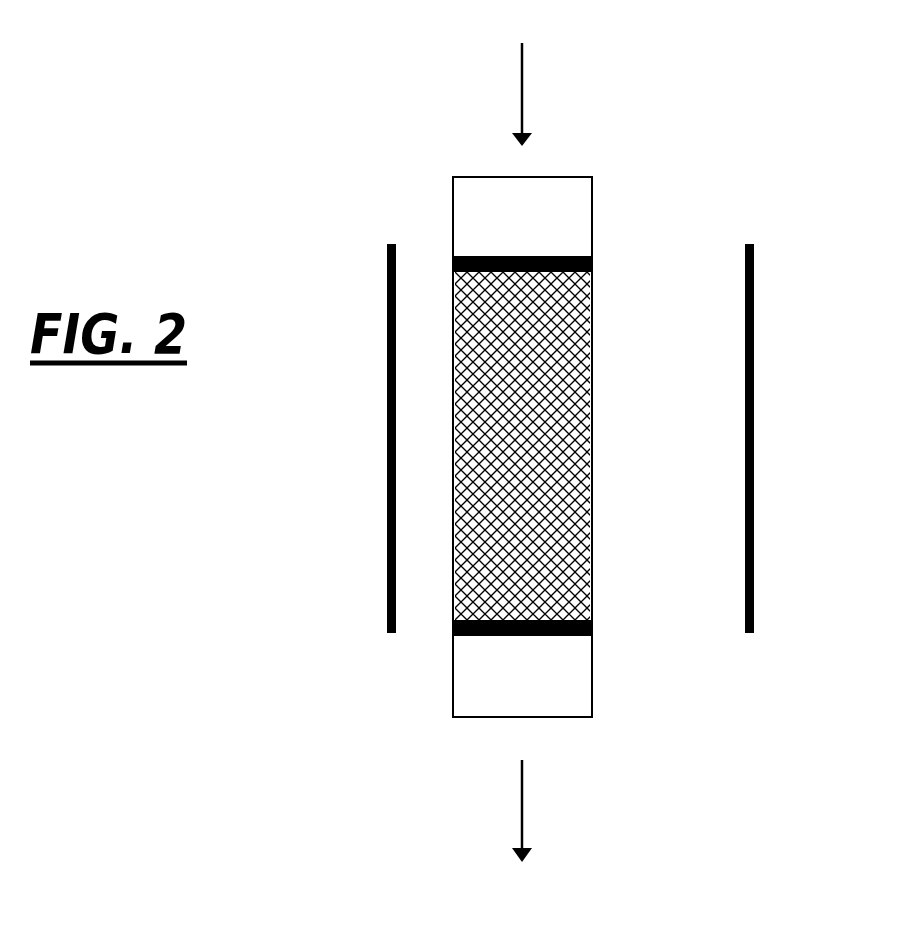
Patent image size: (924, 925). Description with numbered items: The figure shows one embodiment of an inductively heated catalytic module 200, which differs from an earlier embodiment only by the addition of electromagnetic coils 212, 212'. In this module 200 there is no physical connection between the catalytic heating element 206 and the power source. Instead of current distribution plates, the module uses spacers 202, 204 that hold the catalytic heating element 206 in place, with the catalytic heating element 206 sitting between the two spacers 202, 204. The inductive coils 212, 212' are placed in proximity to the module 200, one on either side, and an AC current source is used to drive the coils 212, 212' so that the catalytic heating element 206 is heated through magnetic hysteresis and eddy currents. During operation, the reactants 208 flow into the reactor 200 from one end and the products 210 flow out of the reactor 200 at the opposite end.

The inductively heated catalytic module 200 is at (452, 217).
The spacer 202 is at (592, 263).
The spacer 204 is at (592, 627).
The catalytic heating element 206 is at (575, 448).
The reactants 208 is at (528, 92).
The products 210 is at (525, 827).
The electromagnetic coil 212 is at (304, 438).
The electromagnetic coil 212' is at (829, 438).